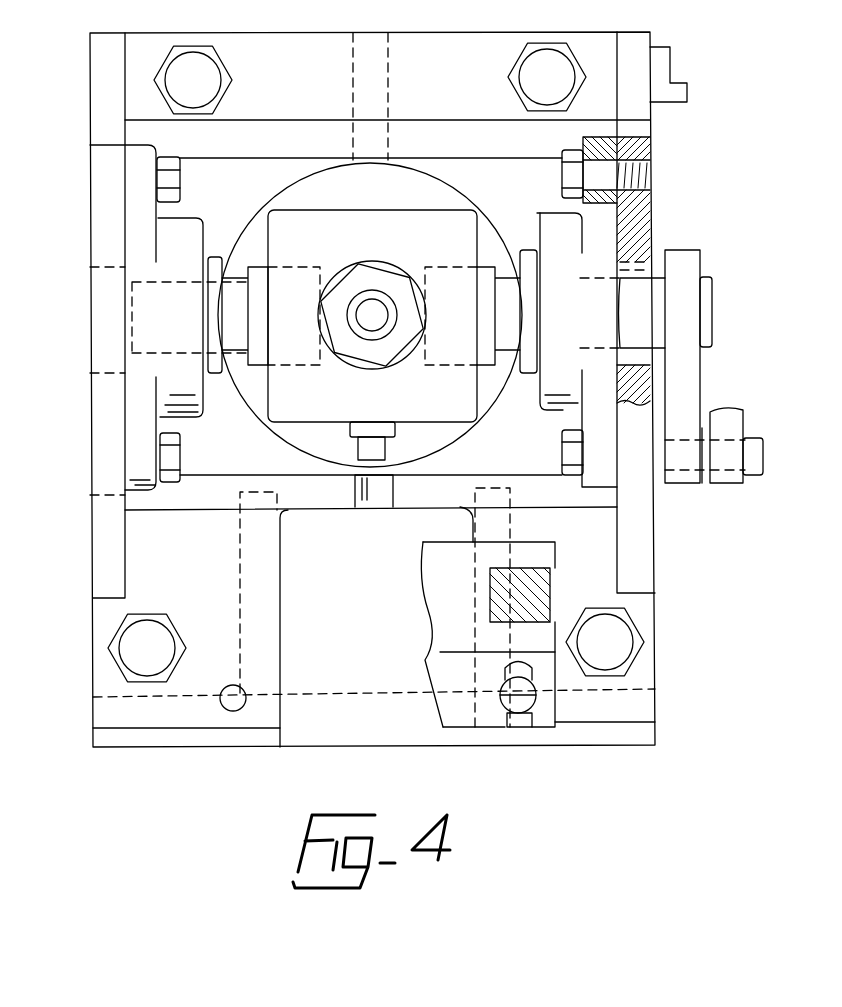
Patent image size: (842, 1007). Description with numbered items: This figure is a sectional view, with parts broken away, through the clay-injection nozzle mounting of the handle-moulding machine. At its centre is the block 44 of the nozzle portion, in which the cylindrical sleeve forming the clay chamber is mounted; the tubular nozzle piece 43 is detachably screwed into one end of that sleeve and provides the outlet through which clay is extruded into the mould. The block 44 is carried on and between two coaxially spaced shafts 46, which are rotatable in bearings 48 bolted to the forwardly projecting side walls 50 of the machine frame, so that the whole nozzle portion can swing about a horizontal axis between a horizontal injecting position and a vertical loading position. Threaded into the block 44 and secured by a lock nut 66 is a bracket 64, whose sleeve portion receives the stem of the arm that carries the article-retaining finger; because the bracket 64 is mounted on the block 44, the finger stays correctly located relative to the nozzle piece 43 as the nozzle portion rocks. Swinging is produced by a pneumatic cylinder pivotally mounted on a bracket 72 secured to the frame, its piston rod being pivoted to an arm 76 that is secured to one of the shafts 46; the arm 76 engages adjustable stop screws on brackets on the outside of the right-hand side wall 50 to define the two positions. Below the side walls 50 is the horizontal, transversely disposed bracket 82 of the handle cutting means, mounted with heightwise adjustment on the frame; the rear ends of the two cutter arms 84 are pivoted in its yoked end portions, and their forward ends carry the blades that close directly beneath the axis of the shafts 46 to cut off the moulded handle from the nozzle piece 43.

The nozzle piece 43 is at (383, 298).
The block 44 is at (268, 212).
The shafts 46 is at (165, 322).
The bearings 48 is at (140, 210).
The side walls 50 is at (92, 78).
The bracket 64 is at (356, 462).
The lock nut 66 is at (350, 432).
The bracket 72 is at (692, 88).
The arm 76 is at (693, 372).
The bracket 82 is at (437, 583).
The cutter arms 84 is at (551, 590).